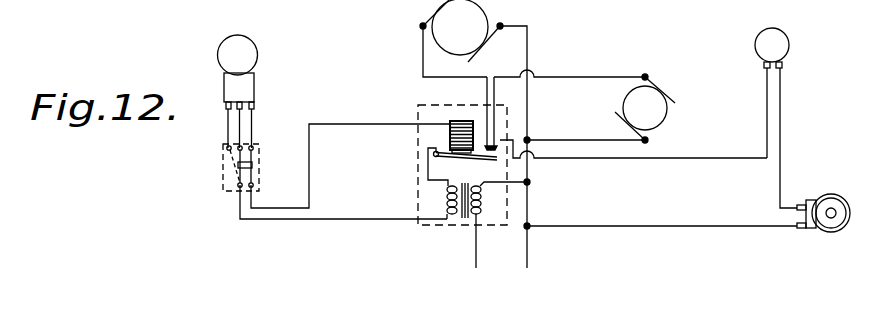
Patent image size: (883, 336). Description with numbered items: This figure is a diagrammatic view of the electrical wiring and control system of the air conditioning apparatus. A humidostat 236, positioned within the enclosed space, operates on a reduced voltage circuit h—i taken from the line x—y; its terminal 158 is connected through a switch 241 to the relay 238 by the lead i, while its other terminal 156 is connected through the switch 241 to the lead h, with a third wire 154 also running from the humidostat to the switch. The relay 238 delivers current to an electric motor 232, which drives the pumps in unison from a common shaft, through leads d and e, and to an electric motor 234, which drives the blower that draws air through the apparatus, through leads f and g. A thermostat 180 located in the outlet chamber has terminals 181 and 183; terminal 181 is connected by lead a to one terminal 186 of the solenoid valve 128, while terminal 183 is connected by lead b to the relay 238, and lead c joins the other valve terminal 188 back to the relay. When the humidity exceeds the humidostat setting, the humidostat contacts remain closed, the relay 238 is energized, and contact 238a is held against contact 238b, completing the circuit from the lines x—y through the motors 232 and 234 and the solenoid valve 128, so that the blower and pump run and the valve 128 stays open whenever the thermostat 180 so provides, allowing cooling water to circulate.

The humidostat 236 is at (254, 53).
The lamp wire 154 is at (228, 122).
The humidostat terminal 156 is at (242, 118).
The humidostat terminal 158 is at (253, 146).
The switch 241 is at (221, 181).
The electric motor 232 is at (461, 31).
The relay 238 is at (416, 175).
The relay contact 238a is at (527, 182).
The relay contact 238b is at (491, 147).
The electric motor 234 is at (653, 112).
The thermostat 180 is at (789, 43).
The thermostat terminal 183 is at (764, 70).
The thermostat terminal 181 is at (783, 68).
The solenoid valve terminal 186 is at (803, 205).
The solenoid valve 128 is at (830, 198).
The solenoid valve terminal 188 is at (801, 229).